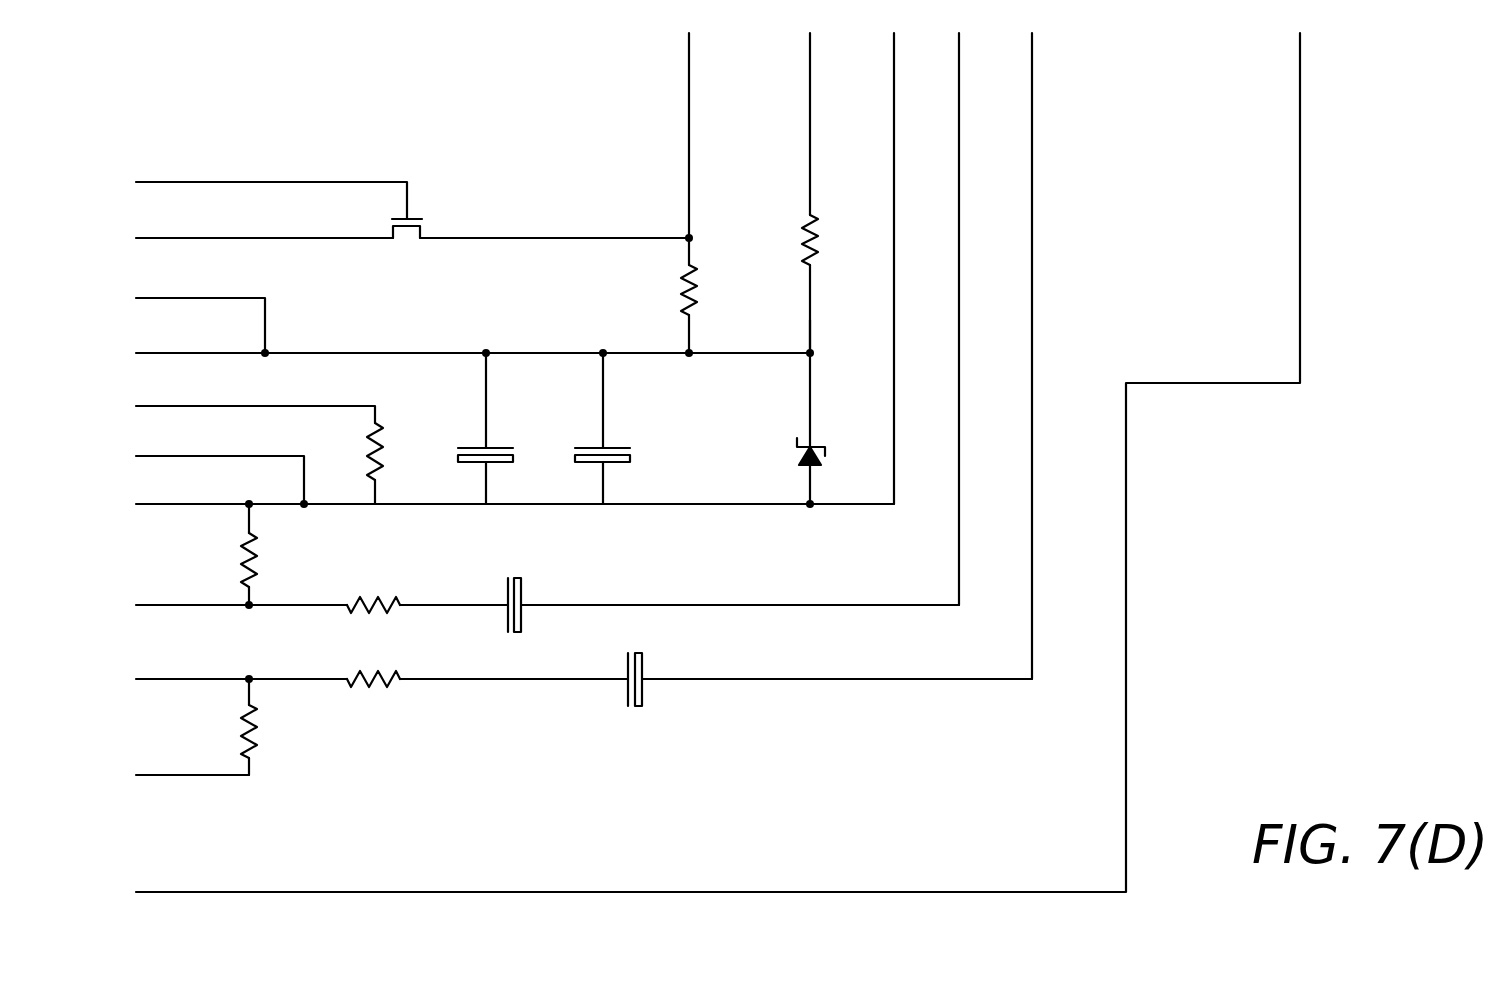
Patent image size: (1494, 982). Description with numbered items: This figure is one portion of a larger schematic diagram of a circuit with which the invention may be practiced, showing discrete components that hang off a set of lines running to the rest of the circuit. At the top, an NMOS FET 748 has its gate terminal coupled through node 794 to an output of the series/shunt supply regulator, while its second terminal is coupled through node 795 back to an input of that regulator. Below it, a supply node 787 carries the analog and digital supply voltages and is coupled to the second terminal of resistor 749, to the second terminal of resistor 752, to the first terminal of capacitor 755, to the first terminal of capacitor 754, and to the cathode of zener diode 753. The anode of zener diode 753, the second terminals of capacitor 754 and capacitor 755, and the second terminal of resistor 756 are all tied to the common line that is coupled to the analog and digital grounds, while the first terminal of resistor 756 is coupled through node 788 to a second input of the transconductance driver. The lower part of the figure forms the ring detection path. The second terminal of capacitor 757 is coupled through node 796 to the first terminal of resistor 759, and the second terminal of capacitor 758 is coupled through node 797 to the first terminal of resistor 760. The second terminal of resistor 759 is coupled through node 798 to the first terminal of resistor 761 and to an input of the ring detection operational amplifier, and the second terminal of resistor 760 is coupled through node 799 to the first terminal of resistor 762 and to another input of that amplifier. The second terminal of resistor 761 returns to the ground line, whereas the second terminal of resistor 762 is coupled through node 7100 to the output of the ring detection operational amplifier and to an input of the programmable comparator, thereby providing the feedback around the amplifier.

The NMOS FET 748 is at (425, 226).
The resistor 749 is at (684, 295).
The resistor 752 is at (808, 226).
The zener diode 753 is at (802, 462).
The capacitor 754 is at (622, 446).
The capacitor 755 is at (505, 446).
The resistor 756 is at (380, 446).
The capacitor 757 is at (524, 588).
The capacitor 758 is at (645, 695).
The resistor 759 is at (396, 598).
The resistor 760 is at (374, 690).
The resistor 761 is at (258, 574).
The resistor 762 is at (256, 742).
The node 787 is at (808, 320).
The node 788 is at (314, 405).
The node 794 is at (372, 182).
The node 795 is at (330, 240).
The node 796 is at (466, 604).
The node 797 is at (516, 684).
The node 798 is at (208, 606).
The node 799 is at (279, 679).
The node 7100 is at (218, 777).